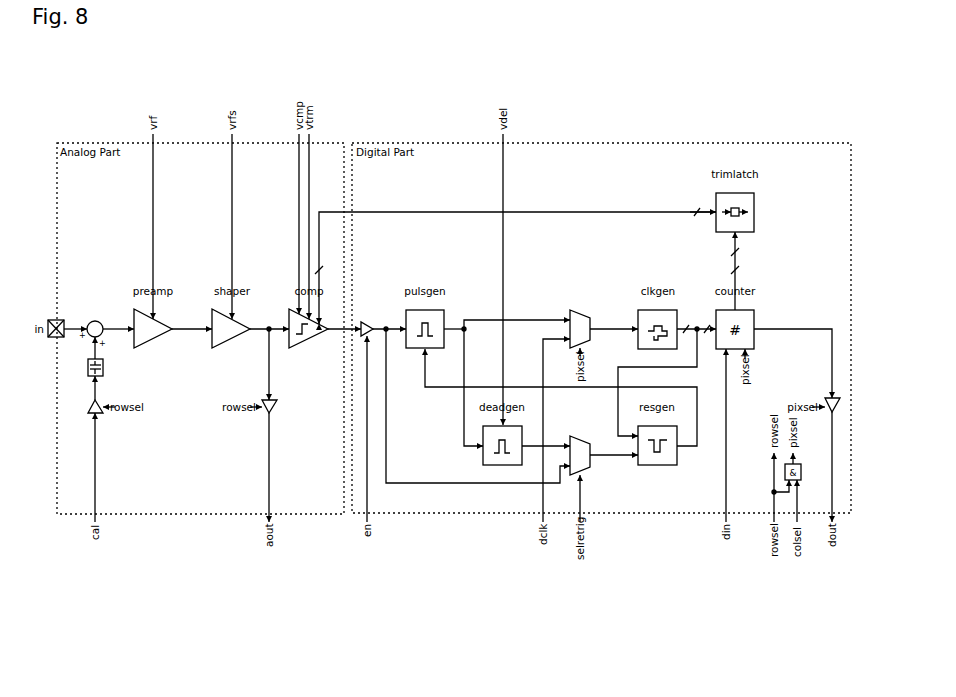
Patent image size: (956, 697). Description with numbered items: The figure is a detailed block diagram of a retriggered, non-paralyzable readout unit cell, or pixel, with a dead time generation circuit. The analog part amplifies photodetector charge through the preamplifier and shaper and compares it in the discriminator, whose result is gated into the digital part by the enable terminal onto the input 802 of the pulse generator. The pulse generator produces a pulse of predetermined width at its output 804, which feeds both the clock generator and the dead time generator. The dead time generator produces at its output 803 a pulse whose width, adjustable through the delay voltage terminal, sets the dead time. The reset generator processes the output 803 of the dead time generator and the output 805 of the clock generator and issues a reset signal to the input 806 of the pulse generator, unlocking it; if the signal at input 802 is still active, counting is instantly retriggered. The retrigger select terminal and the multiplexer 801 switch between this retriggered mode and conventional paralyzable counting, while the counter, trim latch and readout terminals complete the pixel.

The multiplexer 801 is at (580, 447).
The input of the pulse generator 802 is at (389, 321).
The output of the dead time generator 803 is at (546, 437).
The output of the pulse generator 804 is at (516, 316).
The output of the clock generator 805 is at (696, 321).
The input of the pulse generator for the reset signal 806 is at (561, 397).